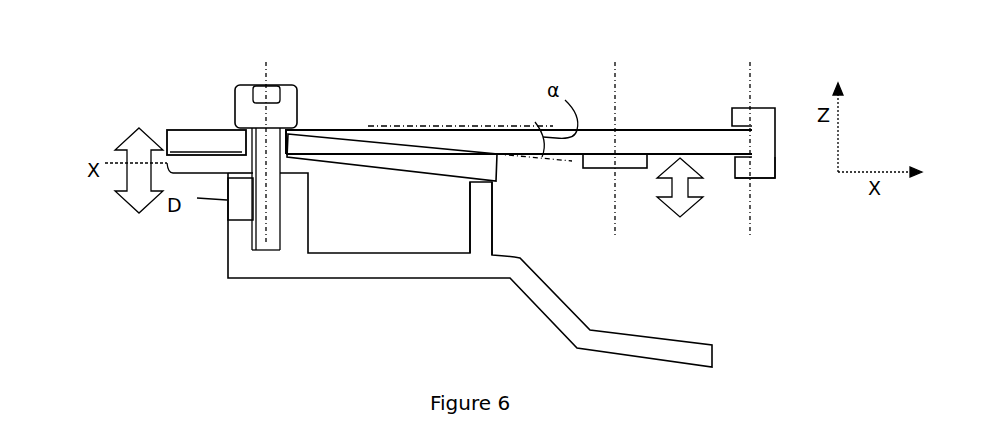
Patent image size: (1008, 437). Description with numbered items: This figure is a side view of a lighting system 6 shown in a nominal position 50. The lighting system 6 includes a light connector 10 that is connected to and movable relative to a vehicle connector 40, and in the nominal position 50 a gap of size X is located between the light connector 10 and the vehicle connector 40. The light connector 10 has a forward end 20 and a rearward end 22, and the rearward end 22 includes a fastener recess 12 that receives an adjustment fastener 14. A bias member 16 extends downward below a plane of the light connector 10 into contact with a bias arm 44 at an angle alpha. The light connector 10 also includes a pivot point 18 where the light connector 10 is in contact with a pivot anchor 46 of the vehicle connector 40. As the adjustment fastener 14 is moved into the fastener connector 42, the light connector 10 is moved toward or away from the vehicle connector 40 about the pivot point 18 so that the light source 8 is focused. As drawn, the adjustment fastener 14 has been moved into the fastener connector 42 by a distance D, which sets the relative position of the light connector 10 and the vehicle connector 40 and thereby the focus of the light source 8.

The lighting system 6 is at (814, 43).
The light source 8 is at (623, 168).
The light connector 10 is at (192, 145).
The fastener recess 12 is at (317, 140).
The adjustment fastener 14 is at (292, 115).
The bias member 16 is at (452, 154).
The pivot point 18 is at (745, 125).
The forward end 20 is at (805, 354).
The rearward end 22 is at (372, 275).
The vehicle connector 40 is at (291, 271).
The fastener connector 42 is at (246, 264).
The bias arm 44 is at (480, 218).
The pivot anchor 46 is at (762, 165).
The nominal position 50 is at (131, 90).